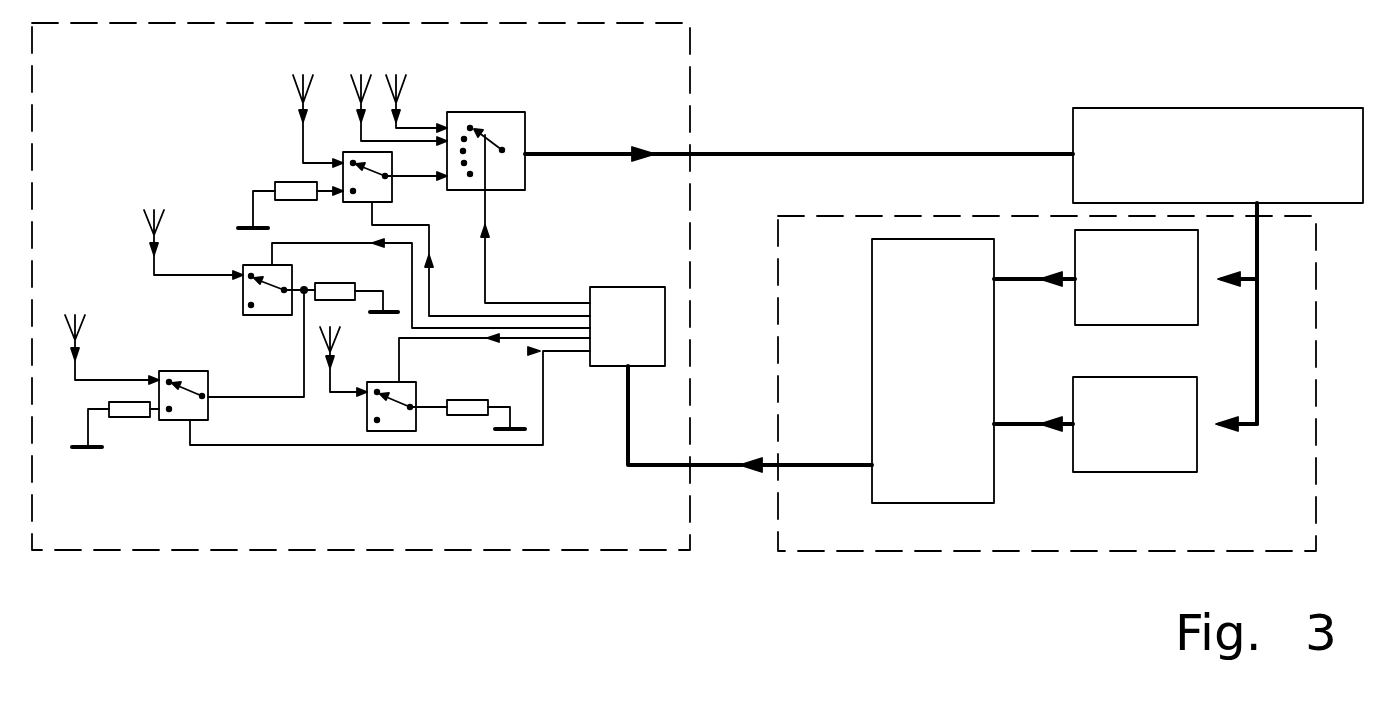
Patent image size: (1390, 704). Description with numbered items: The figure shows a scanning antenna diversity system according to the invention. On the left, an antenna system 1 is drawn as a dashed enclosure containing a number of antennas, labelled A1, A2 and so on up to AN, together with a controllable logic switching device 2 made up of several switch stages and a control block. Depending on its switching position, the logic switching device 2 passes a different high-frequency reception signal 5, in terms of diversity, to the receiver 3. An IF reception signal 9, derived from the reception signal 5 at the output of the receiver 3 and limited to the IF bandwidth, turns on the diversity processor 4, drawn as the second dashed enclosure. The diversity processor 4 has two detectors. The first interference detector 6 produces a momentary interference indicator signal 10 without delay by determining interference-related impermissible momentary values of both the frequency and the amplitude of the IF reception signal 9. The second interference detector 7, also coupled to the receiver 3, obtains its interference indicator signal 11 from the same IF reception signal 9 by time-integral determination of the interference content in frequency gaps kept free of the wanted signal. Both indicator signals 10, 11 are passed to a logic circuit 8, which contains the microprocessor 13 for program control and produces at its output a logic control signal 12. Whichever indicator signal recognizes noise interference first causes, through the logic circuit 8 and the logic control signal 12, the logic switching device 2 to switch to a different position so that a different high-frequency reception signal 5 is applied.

The antenna system 1 is at (647, 88).
The controllable logic switching device 2 is at (645, 346).
The receiver 3 is at (1237, 174).
The diversity processor 4 is at (1283, 525).
The high-frequency reception signal 5 is at (778, 153).
The first interference detector 6 is at (1156, 299).
The second interference detector 7 is at (1150, 440).
The logic circuit 8 is at (945, 364).
The IF reception signal 9 is at (1257, 272).
The momentary interference indicator signal 10 is at (1007, 283).
The interference indicator signal 11 is at (1003, 427).
The logic control signal 12 is at (698, 472).
The microprocessor 13 is at (947, 420).
The antenna A1 is at (396, 78).
The antenna A2 is at (360, 78).
The antenna AN is at (352, 361).